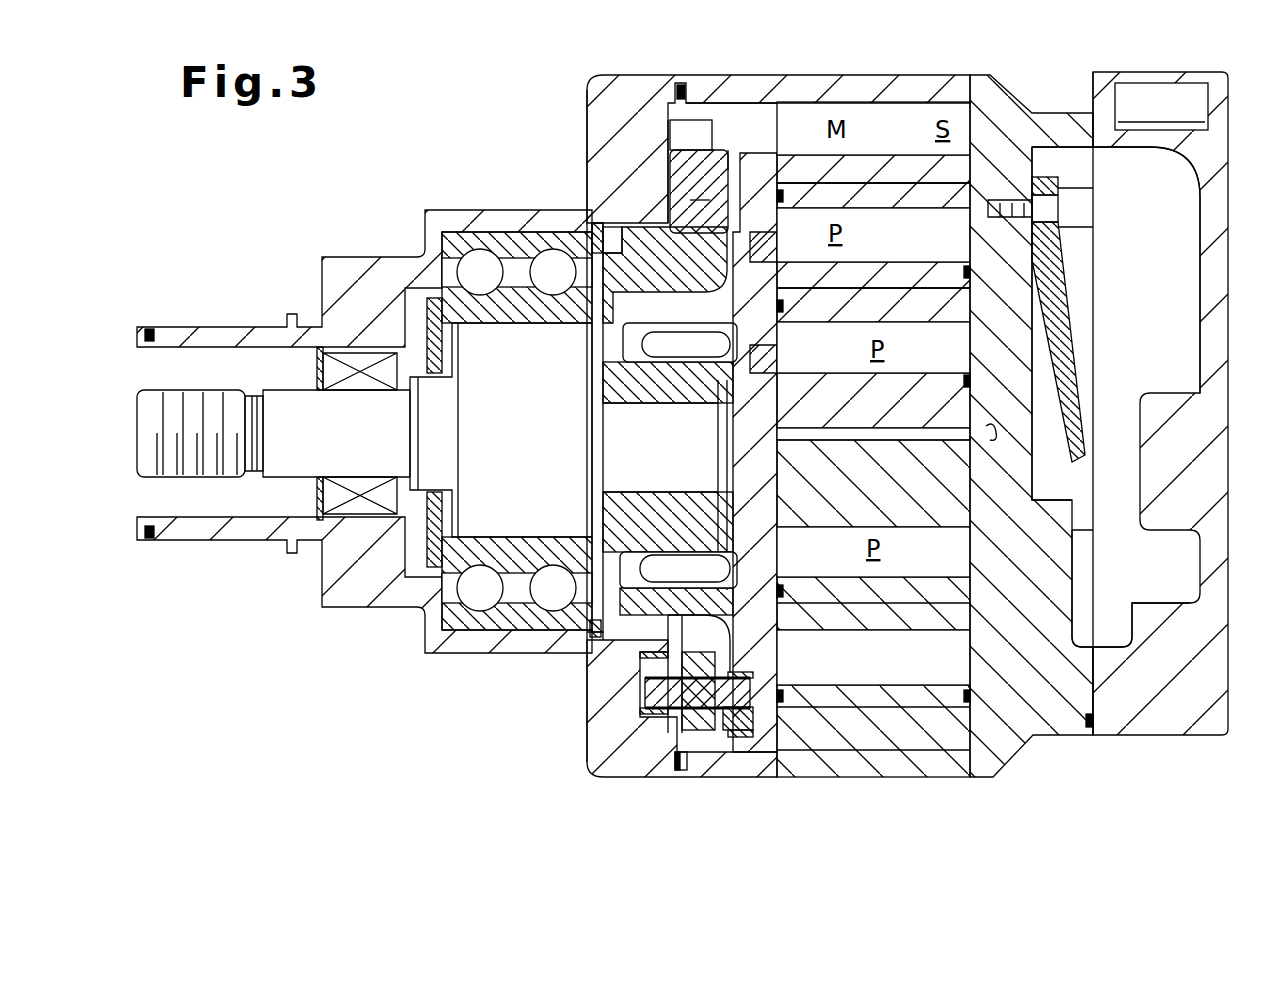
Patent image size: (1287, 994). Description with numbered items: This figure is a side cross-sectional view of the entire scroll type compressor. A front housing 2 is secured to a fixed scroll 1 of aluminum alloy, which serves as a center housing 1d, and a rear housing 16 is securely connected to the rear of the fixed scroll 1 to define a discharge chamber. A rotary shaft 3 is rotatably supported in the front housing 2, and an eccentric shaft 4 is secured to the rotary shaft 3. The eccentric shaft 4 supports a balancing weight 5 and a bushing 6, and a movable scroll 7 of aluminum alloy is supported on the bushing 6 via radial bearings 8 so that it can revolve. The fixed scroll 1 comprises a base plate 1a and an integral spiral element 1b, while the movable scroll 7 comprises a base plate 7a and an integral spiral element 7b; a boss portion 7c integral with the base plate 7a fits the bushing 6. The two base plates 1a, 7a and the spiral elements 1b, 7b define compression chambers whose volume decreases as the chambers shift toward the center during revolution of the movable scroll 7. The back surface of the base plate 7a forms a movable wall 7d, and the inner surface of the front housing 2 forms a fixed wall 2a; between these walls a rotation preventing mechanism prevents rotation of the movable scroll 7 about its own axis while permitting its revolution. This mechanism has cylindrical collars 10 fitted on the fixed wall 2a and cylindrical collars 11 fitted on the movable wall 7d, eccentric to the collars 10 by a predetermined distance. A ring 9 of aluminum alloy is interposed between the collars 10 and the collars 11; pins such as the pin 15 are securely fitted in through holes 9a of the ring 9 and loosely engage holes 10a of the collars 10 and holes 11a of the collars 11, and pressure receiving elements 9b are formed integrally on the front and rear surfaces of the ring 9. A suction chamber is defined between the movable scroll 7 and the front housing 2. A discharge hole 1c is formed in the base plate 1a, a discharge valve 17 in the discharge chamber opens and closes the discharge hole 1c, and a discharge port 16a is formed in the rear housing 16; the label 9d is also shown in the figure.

The fixed scroll 1 is at (888, 76).
The base plate 1a is at (970, 545).
The spiral element 1b is at (944, 200).
The discharge hole 1c is at (992, 450).
The center housing 1d is at (828, 102).
The front housing 2 is at (513, 212).
The fixed wall 2a is at (668, 160).
The rotary shaft 3 is at (222, 400).
The eccentric shaft 4 is at (602, 455).
The balancing weight 5 is at (598, 318).
The bushing 6 is at (635, 382).
The movable scroll 7 is at (808, 126).
The base plate 7a is at (770, 352).
The spiral element 7b is at (868, 180).
The boss portion 7c is at (660, 302).
The movable wall 7d is at (768, 232).
The radial bearings 8 is at (693, 375).
The ring 9 is at (715, 145).
The through holes 9a is at (682, 765).
The pressure receiving elements 9b is at (700, 210).
The sleeve portion 9d is at (730, 155).
The cylindrical collars 10 is at (700, 700).
The holes 10a is at (643, 656).
The cylindrical collars 11 is at (725, 752).
The holes 11a is at (750, 740).
The pin 15 is at (650, 695).
The rear housing 16 is at (1228, 258).
The discharge port 16a is at (1130, 124).
The discharge valve 17 is at (1040, 448).